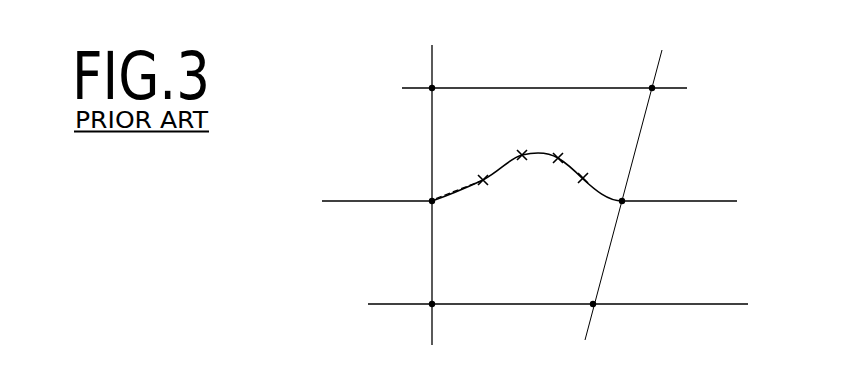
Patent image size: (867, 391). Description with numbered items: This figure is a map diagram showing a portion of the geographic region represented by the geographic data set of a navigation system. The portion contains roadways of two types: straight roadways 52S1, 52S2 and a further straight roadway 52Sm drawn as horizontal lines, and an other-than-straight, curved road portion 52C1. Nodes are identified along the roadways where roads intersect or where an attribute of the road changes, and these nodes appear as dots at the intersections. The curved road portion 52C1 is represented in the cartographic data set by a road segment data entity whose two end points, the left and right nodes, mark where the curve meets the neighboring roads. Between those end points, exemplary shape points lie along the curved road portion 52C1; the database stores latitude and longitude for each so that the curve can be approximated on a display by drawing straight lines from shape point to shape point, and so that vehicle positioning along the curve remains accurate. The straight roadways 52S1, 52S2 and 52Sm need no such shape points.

The straight roadway 52S1 is at (483, 88).
The straight roadway 52S2 is at (546, 305).
The m-th scanning line 52Sm is at (646, 305).
The curved road portion 52C1 is at (612, 204).